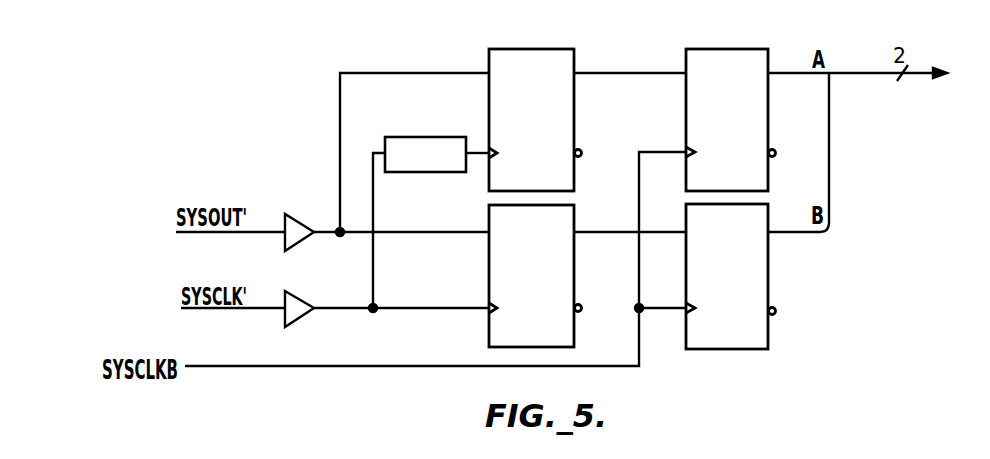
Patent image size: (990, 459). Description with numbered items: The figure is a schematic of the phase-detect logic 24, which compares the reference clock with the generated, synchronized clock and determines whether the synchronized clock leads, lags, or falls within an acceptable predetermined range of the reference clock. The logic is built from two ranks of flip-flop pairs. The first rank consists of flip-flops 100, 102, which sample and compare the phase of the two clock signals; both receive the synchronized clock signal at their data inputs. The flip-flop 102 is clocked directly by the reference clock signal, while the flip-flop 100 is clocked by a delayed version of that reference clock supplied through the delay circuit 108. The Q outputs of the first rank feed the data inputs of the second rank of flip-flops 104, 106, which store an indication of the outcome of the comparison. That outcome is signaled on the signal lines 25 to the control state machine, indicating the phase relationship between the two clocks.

The flip-flop 100 is at (548, 49).
The flip-flop 102 is at (575, 207).
The flip-flop 104 is at (746, 49).
The flip-flop 106 is at (745, 350).
The delay circuit 108 is at (415, 137).
The phase-detect logic 24 is at (680, 391).
The signal lines 25 is at (840, 63).